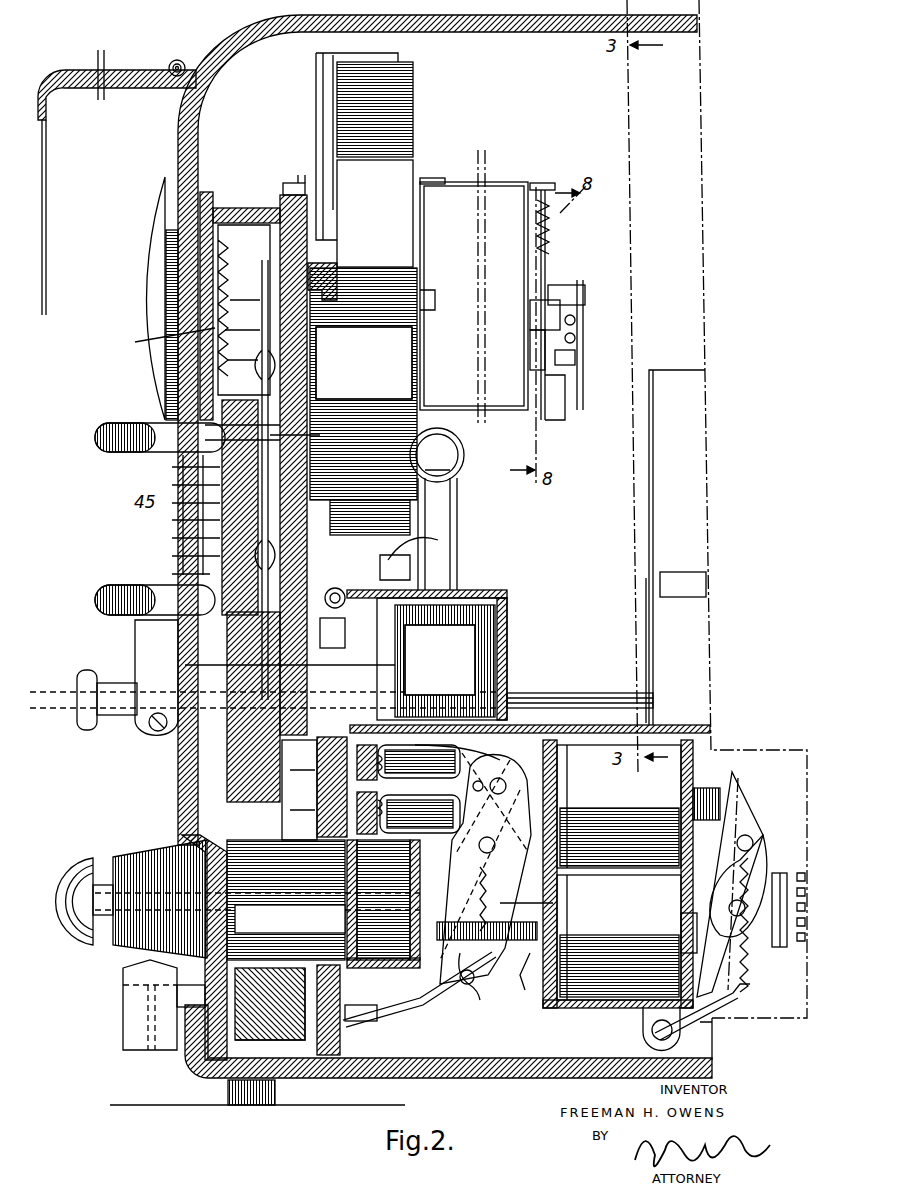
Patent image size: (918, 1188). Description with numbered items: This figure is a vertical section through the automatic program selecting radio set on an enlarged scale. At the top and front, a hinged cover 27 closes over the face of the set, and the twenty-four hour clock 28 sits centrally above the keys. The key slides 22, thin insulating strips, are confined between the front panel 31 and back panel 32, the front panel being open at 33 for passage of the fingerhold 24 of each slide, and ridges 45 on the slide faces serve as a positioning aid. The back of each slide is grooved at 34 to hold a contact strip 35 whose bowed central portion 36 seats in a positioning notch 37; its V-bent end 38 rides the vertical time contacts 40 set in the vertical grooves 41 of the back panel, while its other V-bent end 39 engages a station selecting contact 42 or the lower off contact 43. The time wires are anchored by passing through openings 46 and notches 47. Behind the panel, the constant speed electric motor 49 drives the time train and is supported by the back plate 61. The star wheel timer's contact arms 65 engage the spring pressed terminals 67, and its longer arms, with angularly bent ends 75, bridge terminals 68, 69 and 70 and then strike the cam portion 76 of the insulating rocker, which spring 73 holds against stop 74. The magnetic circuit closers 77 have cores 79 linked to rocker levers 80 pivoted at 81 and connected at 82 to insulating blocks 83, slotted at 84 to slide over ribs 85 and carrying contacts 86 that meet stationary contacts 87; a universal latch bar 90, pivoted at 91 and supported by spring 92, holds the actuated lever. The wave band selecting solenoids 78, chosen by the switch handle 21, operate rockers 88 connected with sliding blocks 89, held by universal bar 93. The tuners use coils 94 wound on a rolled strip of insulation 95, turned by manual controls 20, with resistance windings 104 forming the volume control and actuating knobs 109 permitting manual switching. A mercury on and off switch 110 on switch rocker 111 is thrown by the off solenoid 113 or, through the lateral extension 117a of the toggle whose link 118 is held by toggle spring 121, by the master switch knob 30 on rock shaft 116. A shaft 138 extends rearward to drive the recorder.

The hinged cover 27 is at (50, 152).
The twenty-four hour clock 28 is at (148, 225).
The key slides 22 is at (232, 205).
The vertical grooves 41 is at (235, 255).
The time contacts 40 is at (288, 186).
The notches 47 is at (300, 178).
The back panel 32 is at (320, 180).
The back plate 61 is at (428, 178).
The constant speed electric motor 49 is at (508, 180).
The front panel 31 is at (200, 375).
The ridges 45 is at (153, 345).
The openings 46 is at (320, 432).
The V-bent end 38 is at (228, 435).
The fingerhold 24 is at (110, 455).
The grooves 34 is at (179, 466).
The contact strips 35 is at (178, 484).
The station selecting contacts 42 is at (177, 519).
The bowed central portion 36 is at (177, 537).
The positioning notches 37 is at (177, 555).
The opening 33 is at (172, 519).
The V-bent end 39 is at (235, 664).
The off contact 43 is at (375, 664).
The master switch knob 30 is at (78, 720).
The rock shaft 116 is at (118, 715).
The on and off switch 110 is at (450, 458).
The switch rocker 111 is at (455, 500).
The lateral extension 117a is at (430, 545).
The off solenoid 113 is at (490, 615).
The toggle link 118 is at (345, 600).
The toggle spring 121 is at (345, 630).
The shaft 138 is at (572, 693).
The spring 73 is at (552, 240).
The terminal 70 is at (585, 295).
The terminal 68 is at (575, 320).
The spring pressed terminals 67 is at (575, 338).
The terminal 69 is at (575, 358).
The contact arms 65 is at (583, 395).
The angularly bent ends 75 is at (555, 420).
The cam portion 76 is at (530, 318).
The stop 74 is at (530, 345).
The insulating blocks 83 is at (419, 761).
The slots 84 is at (445, 810).
The contacts 86 is at (397, 781).
The stationary contacts 87 is at (373, 762).
The ribs 85 is at (372, 790).
The connection 82 is at (505, 765).
The pivot 81 is at (495, 847).
The spring 92 is at (513, 903).
The cores 79 is at (523, 971).
The universal latch bar 90 is at (477, 980).
The rocker levers 80 is at (473, 985).
The resistance windings 104 is at (445, 1010).
The pivot 91 is at (360, 1022).
The wave band selecting solenoids 78 is at (631, 874).
The magnetic circuit closers 77 is at (627, 937).
The rockers 88 is at (748, 810).
The sliding blocks 89 is at (768, 865).
The universal bar 93 is at (742, 1000).
The actuating knobs 109 is at (88, 855).
The manual controls 20 is at (175, 845).
The coils 94 is at (292, 900).
The strip of insulation 95 is at (287, 930).
The switch handle 21 is at (132, 1005).